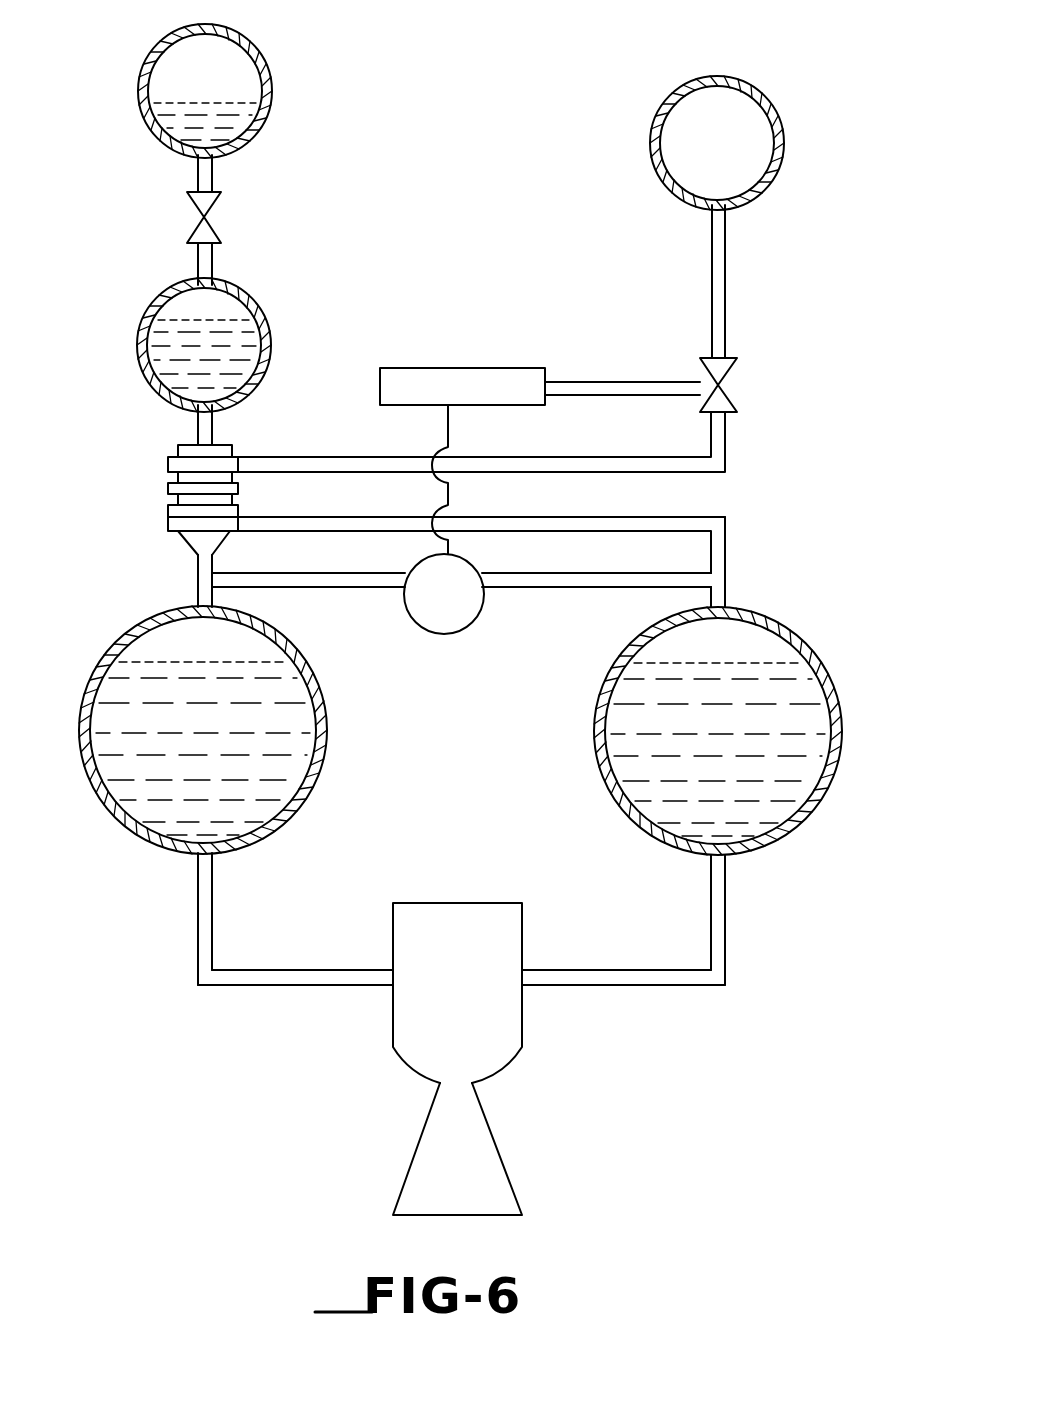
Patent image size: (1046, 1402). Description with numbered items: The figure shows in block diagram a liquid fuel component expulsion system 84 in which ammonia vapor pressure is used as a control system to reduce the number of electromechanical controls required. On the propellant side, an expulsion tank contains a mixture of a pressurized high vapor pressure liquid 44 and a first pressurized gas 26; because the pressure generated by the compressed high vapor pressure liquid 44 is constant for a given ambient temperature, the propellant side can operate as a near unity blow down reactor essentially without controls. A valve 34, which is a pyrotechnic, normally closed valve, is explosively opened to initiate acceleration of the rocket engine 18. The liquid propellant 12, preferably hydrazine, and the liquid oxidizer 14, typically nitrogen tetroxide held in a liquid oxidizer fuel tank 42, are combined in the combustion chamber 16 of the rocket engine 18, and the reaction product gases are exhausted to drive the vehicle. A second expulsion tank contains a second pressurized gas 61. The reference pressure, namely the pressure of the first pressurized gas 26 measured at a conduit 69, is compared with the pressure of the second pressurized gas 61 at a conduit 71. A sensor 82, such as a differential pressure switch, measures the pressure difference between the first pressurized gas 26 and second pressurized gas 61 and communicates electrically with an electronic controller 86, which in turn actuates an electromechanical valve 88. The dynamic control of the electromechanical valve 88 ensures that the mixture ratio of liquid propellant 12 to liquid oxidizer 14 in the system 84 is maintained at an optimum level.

The liquid propellant 12 is at (287, 775).
The liquid oxidizer 14 is at (793, 760).
The combustion chamber 16 is at (465, 922).
The rocket engine 18 is at (515, 1175).
The first pressurized gas 26 is at (244, 108).
The valve 34 is at (202, 258).
The liquid oxidizer fuel tank 42 is at (762, 794).
The pressurized high vapor pressure liquid 44 is at (233, 132).
The second pressurized gas 61 is at (752, 172).
The conduit 69 is at (203, 580).
The conduit 71 is at (718, 580).
The sensor 82 is at (442, 640).
The propulsion system 84 is at (449, 137).
The electronic controller 86 is at (460, 378).
The electromechanical valve 88 is at (720, 402).